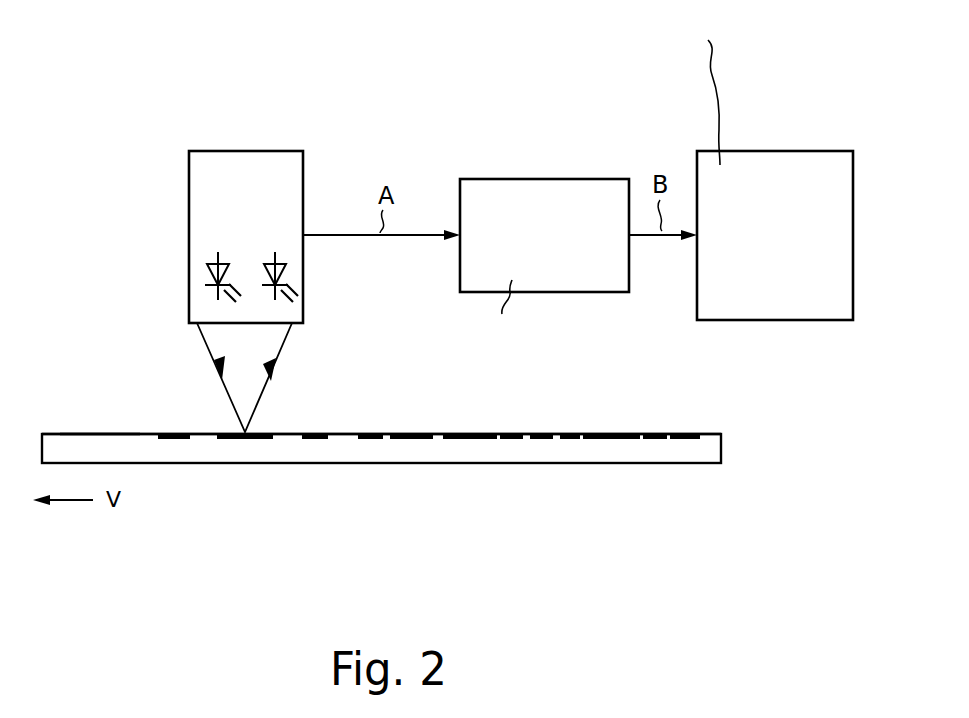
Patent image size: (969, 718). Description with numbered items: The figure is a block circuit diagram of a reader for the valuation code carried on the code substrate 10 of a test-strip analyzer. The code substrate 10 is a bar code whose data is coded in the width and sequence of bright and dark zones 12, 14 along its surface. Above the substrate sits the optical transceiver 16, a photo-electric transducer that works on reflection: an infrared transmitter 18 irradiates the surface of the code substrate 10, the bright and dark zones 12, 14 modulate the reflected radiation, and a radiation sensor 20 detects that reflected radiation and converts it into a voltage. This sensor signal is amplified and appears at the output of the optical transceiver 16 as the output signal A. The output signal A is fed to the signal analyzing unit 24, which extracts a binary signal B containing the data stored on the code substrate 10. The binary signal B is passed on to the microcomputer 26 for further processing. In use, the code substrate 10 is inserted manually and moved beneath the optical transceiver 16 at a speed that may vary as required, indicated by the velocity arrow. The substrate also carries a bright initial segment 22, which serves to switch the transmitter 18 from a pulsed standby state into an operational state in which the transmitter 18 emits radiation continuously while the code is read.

The code substrate 10 is at (663, 465).
The bright zones 12 is at (683, 431).
The dark zones 14 is at (617, 432).
The optical transceiver 16 is at (285, 150).
The infrared transmitter 18 is at (218, 252).
The radiation sensor 20 is at (275, 252).
The bright initial segment 22 is at (98, 433).
The signal analyzing unit 24 is at (573, 178).
The microcomputer 26 is at (795, 150).